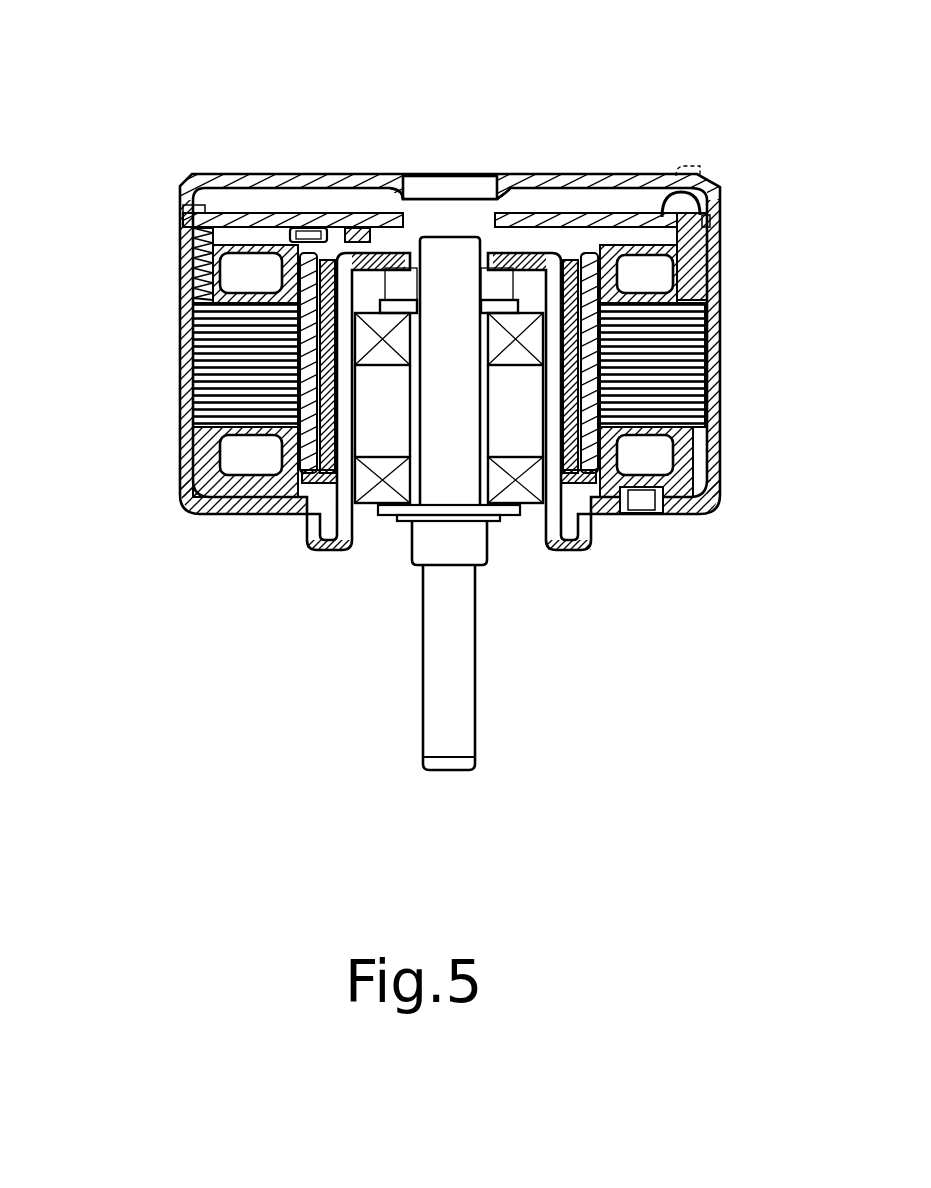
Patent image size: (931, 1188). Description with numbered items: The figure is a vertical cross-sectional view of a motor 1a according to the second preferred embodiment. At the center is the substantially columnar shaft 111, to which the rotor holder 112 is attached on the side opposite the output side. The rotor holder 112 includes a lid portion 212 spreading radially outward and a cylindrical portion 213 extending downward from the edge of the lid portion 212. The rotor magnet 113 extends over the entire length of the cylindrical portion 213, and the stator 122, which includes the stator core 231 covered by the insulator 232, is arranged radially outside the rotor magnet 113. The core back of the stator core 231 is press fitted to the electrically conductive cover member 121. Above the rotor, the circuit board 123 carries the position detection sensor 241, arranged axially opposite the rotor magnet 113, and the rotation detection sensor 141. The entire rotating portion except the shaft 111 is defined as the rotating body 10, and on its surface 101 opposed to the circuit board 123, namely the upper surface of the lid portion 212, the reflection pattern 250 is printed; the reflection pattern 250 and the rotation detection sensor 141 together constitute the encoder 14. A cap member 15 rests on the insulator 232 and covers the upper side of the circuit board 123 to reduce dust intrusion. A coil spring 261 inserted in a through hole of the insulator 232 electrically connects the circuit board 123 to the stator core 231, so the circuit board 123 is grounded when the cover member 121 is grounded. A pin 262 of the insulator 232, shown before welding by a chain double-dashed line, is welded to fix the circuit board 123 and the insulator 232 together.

The motor 1a is at (175, 86).
The encoder 14 is at (360, 93).
The reflection pattern 250 is at (383, 225).
The position detection sensor 241 is at (305, 226).
The rotation detection sensor 141 is at (356, 226).
The surface of the rotating body 101 is at (413, 228).
The rotating body 10 is at (511, 236).
The lid portion 212 is at (548, 225).
The cap member 15 is at (626, 185).
The pin 262 is at (688, 165).
The circuit board 123 is at (185, 212).
The insulator 232 is at (190, 262).
The coil spring 261 is at (188, 286).
The stator core 231 is at (195, 378).
The cover member 121 is at (187, 408).
The stator 122 is at (700, 362).
The rotor magnet 113 is at (306, 496).
The cylindrical portion 213 is at (304, 258).
The rotor holder 112 is at (357, 285).
The shaft 111 is at (465, 697).